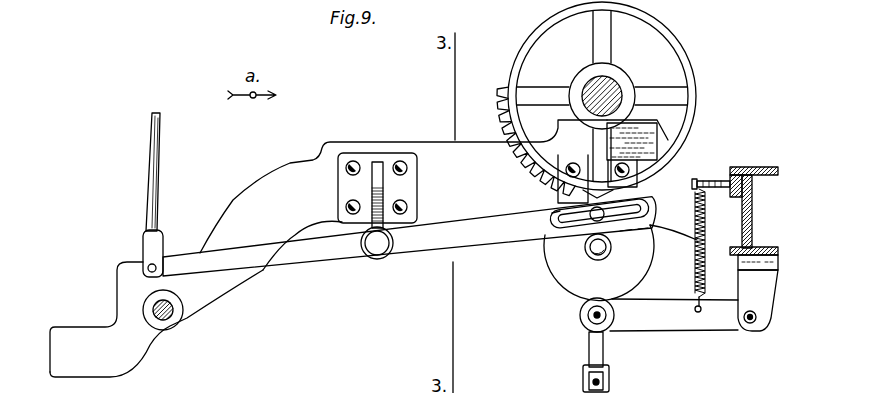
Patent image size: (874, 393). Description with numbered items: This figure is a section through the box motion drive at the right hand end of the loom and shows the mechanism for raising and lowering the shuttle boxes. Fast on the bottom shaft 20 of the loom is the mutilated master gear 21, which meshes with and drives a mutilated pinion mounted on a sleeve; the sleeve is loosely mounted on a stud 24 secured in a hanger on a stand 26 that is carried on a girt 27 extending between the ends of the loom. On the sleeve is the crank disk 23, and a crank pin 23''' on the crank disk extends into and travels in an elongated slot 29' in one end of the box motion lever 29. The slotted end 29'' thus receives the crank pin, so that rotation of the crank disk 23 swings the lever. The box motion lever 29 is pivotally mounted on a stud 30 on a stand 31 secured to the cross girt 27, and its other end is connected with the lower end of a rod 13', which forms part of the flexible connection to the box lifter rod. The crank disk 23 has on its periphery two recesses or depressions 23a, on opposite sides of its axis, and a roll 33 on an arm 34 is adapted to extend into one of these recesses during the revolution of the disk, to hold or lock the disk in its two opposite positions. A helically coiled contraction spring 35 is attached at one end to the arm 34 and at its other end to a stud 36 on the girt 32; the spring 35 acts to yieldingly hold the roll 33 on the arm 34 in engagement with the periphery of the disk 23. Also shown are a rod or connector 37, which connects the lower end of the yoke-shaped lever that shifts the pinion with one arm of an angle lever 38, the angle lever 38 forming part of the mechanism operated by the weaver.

The rod 13' is at (177, 195).
The bottom shaft 20 is at (613, 79).
The master gear 21 is at (693, 66).
The crank disk 23 is at (601, 263).
The recesses or depressions 23a is at (598, 192).
The crank pin 23''' is at (635, 199).
The stud 24 is at (590, 255).
The stand 26 is at (632, 170).
The girt 27 is at (118, 298).
The box motion lever 29 is at (409, 231).
The elongated slot 29' is at (533, 199).
The slotted link 29'' is at (620, 211).
The stud 30 is at (377, 247).
The stand 31 is at (362, 223).
The girt 32 is at (757, 167).
The roll 33 is at (580, 318).
The arm 34 is at (675, 314).
The helically coiled contraction spring 35 is at (697, 258).
The stud 36 is at (705, 178).
The rod or connector 37 is at (606, 382).
The angle lever 38 is at (593, 347).